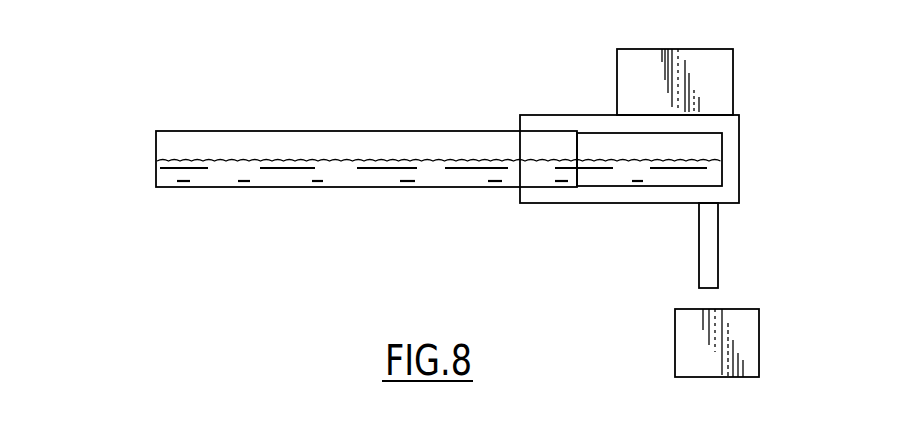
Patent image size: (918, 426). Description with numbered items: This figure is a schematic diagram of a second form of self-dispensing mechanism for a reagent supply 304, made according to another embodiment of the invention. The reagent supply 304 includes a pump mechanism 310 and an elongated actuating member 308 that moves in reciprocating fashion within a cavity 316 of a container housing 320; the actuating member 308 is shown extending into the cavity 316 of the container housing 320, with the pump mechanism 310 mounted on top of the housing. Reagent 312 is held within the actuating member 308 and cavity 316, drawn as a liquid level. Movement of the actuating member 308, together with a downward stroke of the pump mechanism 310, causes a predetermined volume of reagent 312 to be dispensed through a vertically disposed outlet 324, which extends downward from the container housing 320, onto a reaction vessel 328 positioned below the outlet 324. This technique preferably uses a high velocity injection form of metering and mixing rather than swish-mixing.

The reagent supply 304 is at (132, 66).
The actuating member 308 is at (170, 148).
The pump mechanism 310 is at (638, 80).
The reagent 312 is at (303, 173).
The cavity 316 is at (604, 149).
The container housing 320 is at (730, 178).
The outlet 324 is at (720, 247).
The reaction vessel 328 is at (750, 350).